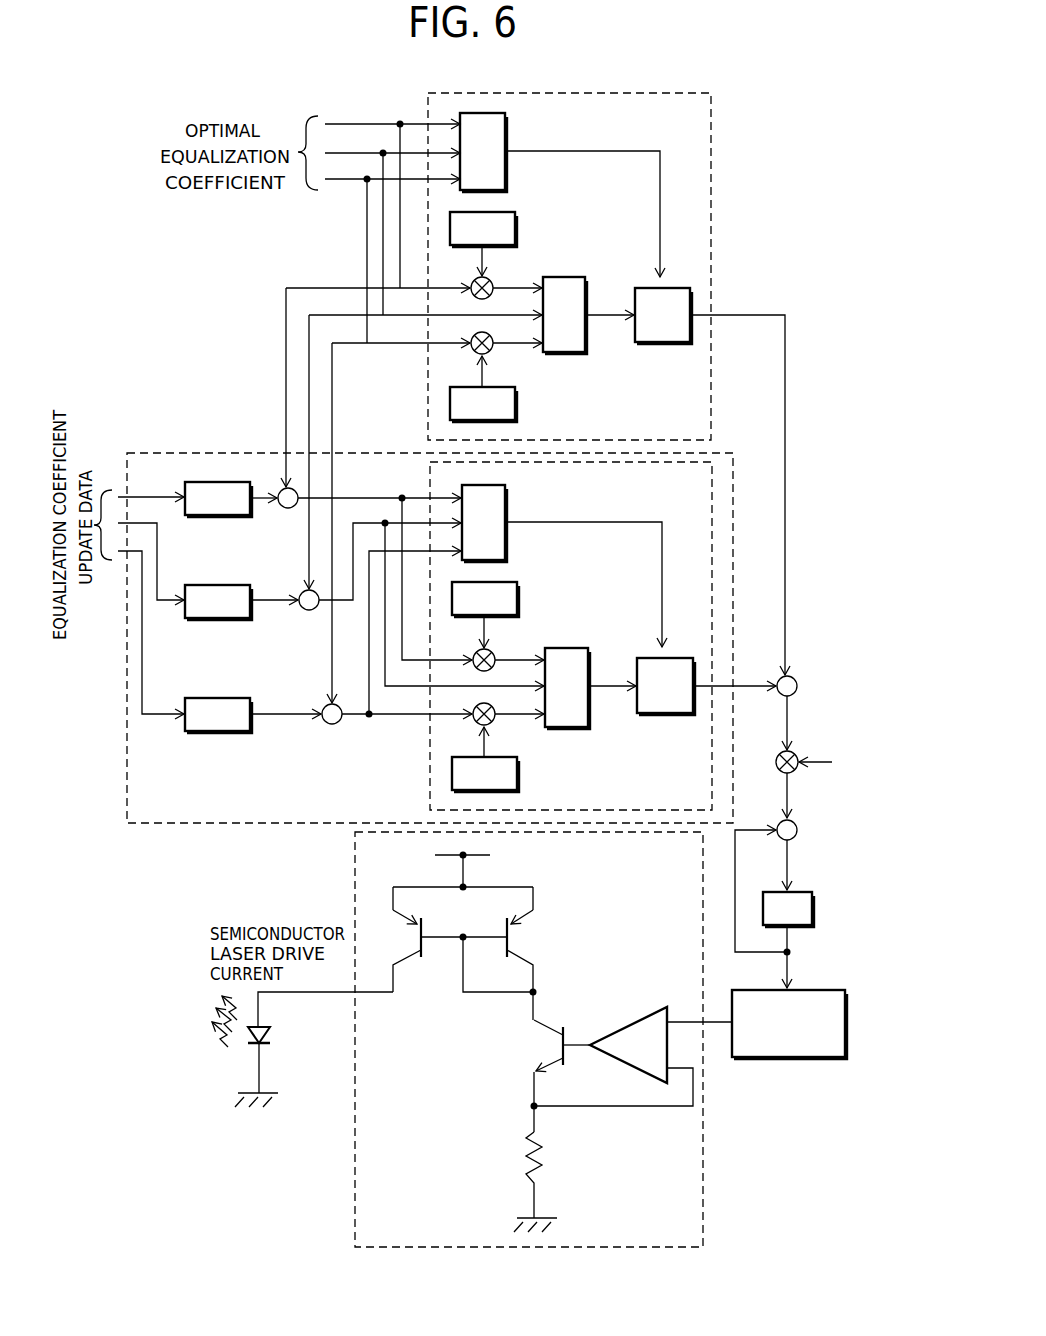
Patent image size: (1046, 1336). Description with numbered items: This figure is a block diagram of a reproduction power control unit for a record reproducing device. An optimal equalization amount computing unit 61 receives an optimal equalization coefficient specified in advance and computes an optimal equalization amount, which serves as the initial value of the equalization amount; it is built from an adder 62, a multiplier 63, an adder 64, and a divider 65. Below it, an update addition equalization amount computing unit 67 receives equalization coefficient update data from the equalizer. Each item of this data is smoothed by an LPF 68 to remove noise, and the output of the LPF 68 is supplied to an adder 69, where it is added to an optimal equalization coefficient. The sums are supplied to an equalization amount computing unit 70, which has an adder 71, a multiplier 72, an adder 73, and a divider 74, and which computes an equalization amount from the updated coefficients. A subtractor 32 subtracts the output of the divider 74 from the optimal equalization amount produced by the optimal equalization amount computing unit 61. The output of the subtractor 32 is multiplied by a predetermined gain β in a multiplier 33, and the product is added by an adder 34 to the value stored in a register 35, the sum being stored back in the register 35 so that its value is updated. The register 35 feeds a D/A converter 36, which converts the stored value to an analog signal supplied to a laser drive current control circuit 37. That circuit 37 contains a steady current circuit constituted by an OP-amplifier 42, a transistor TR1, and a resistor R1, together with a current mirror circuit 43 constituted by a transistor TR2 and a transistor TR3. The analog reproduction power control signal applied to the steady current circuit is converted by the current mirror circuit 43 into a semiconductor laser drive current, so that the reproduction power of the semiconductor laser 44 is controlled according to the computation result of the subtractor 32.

The optimal equalization amount computing unit 61 is at (714, 140).
The adder 62 is at (505, 127).
The multiplier 63 is at (493, 284).
The adder 64 is at (560, 277).
The divider 65 is at (662, 342).
The update addition equalization amount computing unit 67 is at (160, 451).
The LPF 68 is at (218, 515).
The adder 69 is at (290, 508).
The equalization amount computing unit 70 is at (714, 510).
The adder 71 is at (505, 500).
The multiplier 72 is at (495, 656).
The adder 73 is at (565, 648).
The divider 74 is at (664, 713).
The subtractor 32 is at (795, 680).
The multiplier 33 is at (796, 755).
The adder 34 is at (795, 823).
The register 35 is at (798, 925).
The D/A converter 36 is at (788, 1057).
The laser drive current control circuit 37 is at (708, 1215).
The OP-amplifier 42 is at (630, 1015).
The current mirror circuit 43 is at (543, 1042).
The semiconductor laser 44 is at (220, 1060).
The transistor TR1 is at (540, 1025).
The transistor TR2 is at (518, 952).
The transistor TR3 is at (413, 955).
The resistor R1 is at (542, 1161).